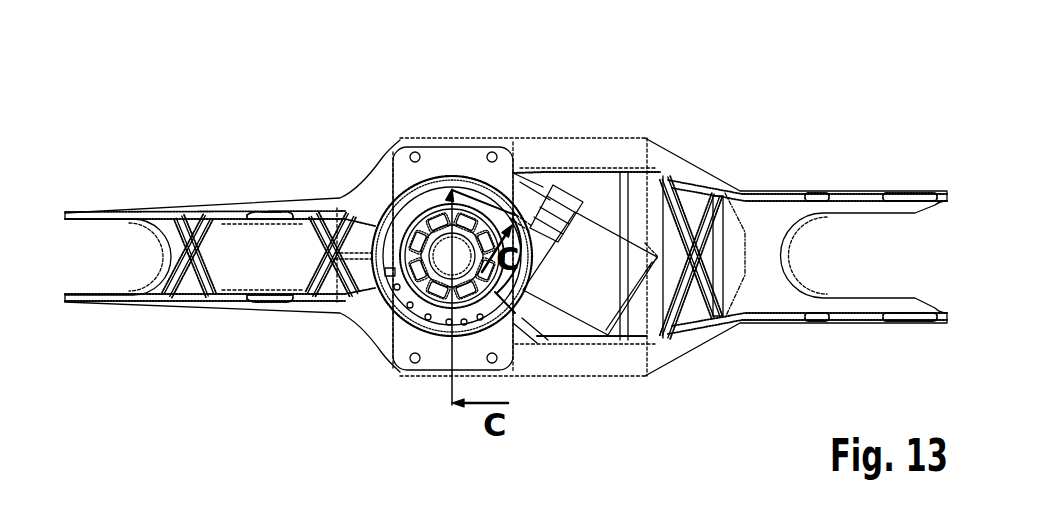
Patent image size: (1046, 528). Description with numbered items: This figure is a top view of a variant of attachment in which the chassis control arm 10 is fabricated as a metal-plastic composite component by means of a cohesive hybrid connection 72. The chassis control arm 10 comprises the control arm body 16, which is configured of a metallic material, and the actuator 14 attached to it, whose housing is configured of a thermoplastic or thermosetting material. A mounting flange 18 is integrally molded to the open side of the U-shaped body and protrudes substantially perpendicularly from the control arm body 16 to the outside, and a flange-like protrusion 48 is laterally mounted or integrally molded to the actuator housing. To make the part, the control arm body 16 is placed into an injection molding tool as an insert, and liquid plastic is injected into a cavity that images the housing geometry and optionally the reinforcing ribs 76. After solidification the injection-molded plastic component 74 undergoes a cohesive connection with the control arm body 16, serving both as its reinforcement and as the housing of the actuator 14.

The chassis control arm 10 is at (110, 97).
The actuator 14 is at (401, 131).
The control arm body 16 is at (682, 125).
The mounting flange 18 is at (547, 152).
The flange-like protrusion 48 is at (452, 160).
The cohesive hybrid connection 72 is at (172, 222).
The plastic component 74 is at (275, 285).
The reinforcing ribs 76 is at (305, 225).